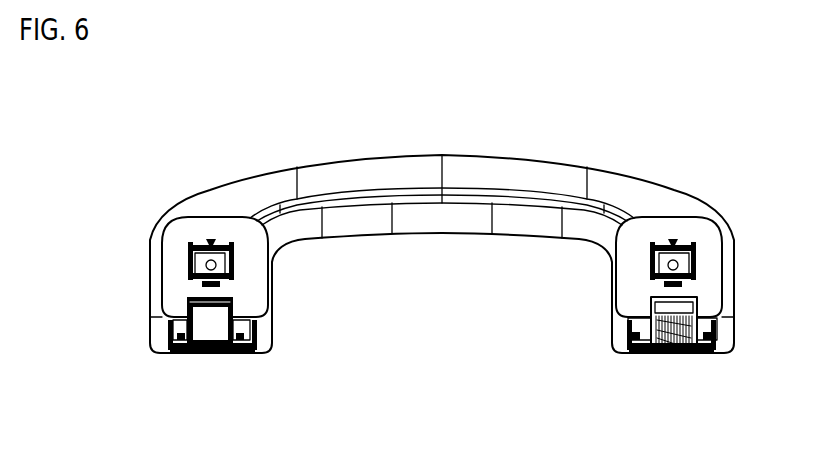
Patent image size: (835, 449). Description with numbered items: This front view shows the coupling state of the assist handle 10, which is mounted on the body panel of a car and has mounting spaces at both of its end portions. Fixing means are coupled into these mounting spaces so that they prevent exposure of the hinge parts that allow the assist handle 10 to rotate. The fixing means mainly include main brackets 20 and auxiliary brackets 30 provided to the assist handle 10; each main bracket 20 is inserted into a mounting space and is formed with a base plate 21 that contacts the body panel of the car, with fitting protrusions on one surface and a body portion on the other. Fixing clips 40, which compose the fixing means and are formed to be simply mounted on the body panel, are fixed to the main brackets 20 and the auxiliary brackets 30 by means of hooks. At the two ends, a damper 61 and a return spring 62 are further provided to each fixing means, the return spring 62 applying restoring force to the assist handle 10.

The assist handle 10 is at (382, 170).
The main bracket 20 is at (247, 355).
The base plate 21 is at (247, 238).
The auxiliary bracket 30 is at (182, 354).
The fixing clip 40 is at (210, 237).
The damper 61 is at (212, 355).
The return spring 62 is at (662, 354).